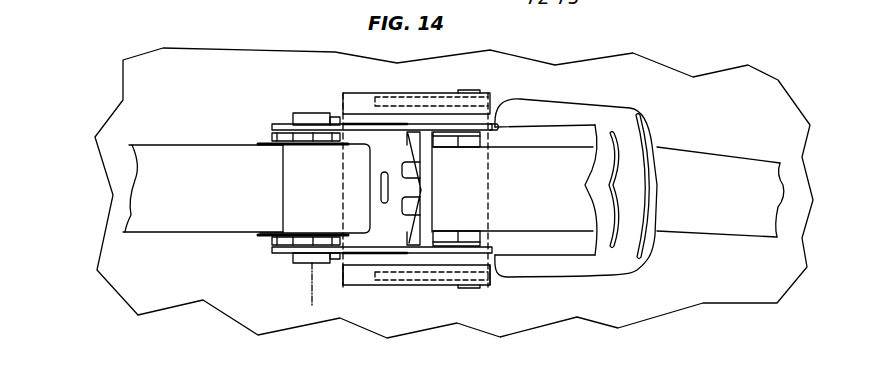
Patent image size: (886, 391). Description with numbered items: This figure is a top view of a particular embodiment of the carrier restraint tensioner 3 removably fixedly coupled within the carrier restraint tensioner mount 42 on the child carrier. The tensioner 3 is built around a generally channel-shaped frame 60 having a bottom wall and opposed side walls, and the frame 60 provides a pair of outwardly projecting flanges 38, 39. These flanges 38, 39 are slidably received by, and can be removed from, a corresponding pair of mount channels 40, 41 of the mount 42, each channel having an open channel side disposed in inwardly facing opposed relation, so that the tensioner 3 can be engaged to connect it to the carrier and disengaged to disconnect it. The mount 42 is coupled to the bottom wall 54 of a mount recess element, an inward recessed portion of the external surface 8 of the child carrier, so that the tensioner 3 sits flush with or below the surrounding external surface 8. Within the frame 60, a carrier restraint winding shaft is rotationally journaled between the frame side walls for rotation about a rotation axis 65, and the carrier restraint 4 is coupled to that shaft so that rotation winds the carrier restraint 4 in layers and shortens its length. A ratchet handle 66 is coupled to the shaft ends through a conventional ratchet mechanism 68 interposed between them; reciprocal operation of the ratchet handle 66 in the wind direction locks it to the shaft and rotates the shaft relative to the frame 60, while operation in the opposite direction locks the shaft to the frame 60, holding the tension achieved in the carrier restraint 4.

The carrier restraint tensioner 3 is at (270, 105).
The carrier restraint 4 is at (152, 180).
The external surface 8 is at (750, 92).
The flange 38 is at (473, 117).
The flange 39 is at (360, 262).
The mount channel 40 is at (368, 100).
The mount channel 41 is at (395, 285).
The carrier restraint tensioner mount 42 is at (430, 287).
The bottom wall 54 is at (425, 125).
The frame 60 is at (332, 112).
The rotation axis 65 is at (312, 300).
The ratchet handle 66 is at (625, 120).
The ratchet mechanism 68 is at (268, 135).